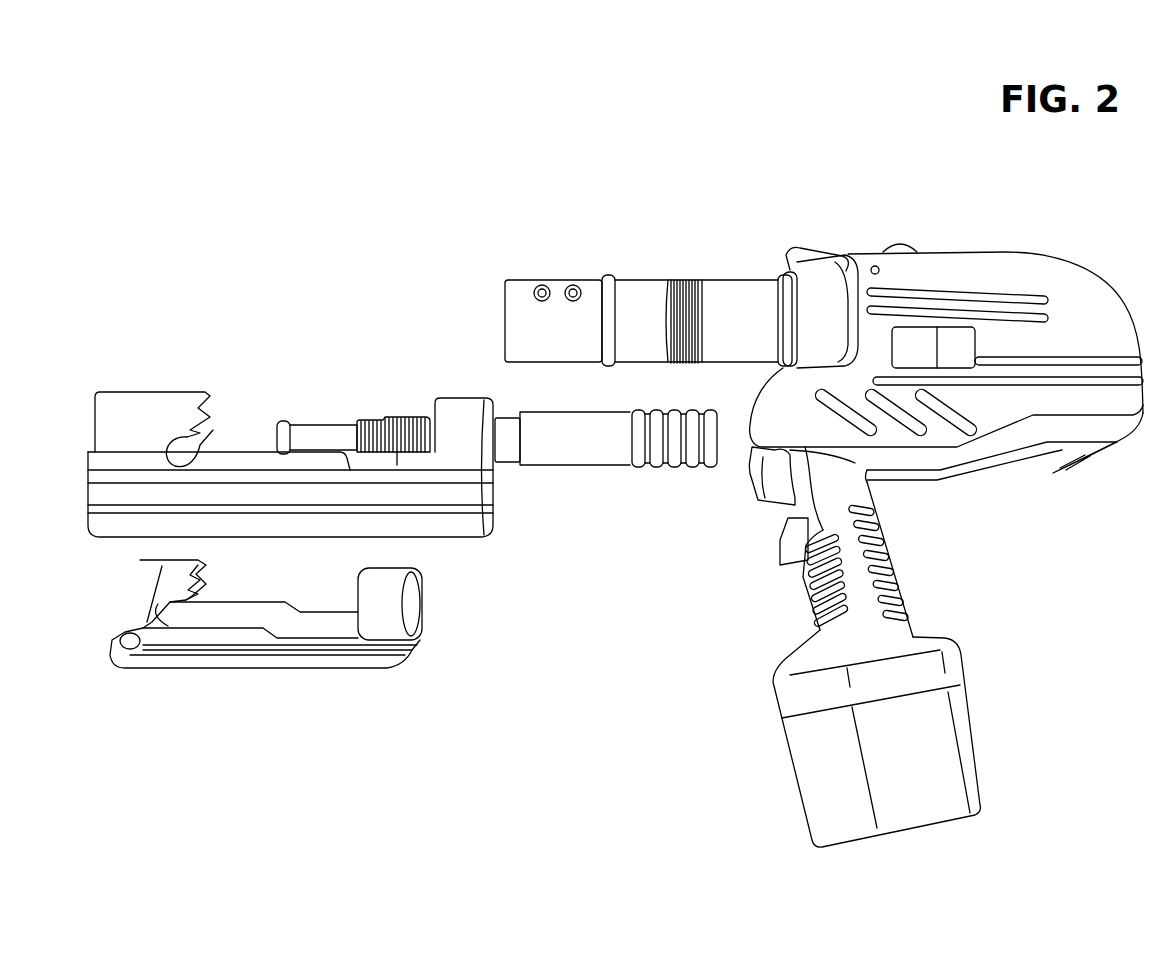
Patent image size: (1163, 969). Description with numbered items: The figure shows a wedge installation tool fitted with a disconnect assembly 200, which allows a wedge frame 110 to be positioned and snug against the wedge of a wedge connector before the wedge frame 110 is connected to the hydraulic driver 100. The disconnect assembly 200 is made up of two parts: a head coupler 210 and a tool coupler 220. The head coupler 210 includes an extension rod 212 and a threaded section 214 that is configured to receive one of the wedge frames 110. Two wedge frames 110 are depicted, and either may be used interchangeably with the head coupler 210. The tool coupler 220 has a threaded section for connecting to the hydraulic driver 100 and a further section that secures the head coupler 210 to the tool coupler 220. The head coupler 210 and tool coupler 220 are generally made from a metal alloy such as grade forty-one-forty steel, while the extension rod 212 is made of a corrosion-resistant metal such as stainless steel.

The hydraulic driver 100 is at (1042, 432).
The wedge frame 110 is at (470, 520).
The disconnect assembly 200 is at (543, 508).
The head coupler 210 is at (588, 455).
The extension rod 212 is at (337, 372).
The threaded section 214 is at (398, 415).
The tool coupler 220 is at (548, 278).